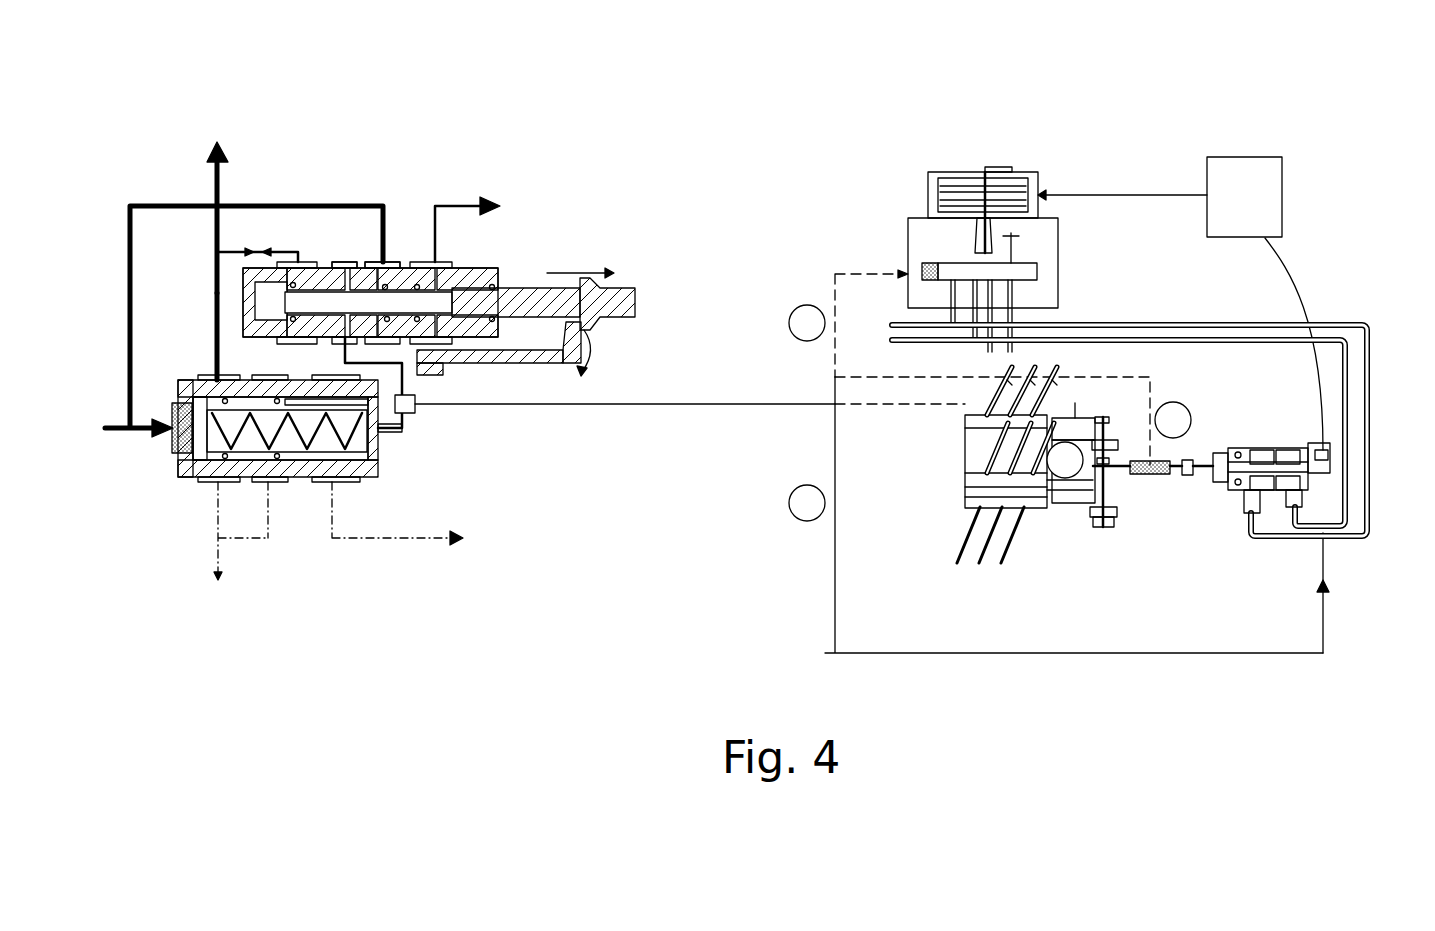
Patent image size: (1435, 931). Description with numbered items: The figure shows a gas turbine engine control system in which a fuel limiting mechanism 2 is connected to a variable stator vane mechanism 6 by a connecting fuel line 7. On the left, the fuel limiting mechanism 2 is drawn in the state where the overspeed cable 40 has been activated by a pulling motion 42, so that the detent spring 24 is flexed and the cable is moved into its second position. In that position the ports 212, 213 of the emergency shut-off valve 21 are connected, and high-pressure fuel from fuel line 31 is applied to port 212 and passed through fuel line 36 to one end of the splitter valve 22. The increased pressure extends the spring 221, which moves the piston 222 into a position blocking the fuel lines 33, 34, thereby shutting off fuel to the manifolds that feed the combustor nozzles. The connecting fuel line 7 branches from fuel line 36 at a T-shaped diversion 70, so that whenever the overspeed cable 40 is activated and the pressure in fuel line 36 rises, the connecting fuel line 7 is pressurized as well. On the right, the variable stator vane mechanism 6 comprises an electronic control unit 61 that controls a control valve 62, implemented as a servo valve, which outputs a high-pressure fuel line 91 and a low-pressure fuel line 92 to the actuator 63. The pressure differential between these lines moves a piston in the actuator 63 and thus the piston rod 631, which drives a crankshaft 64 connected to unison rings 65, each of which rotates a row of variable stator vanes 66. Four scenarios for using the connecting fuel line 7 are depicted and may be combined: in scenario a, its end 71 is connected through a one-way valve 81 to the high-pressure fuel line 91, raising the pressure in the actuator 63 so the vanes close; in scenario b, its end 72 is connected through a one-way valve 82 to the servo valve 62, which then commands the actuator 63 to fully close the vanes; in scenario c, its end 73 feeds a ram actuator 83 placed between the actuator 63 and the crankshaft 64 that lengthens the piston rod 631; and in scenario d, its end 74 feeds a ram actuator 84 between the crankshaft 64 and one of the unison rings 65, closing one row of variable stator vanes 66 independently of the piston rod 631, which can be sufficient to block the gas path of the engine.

The fuel limiting mechanism 2 is at (307, 165).
The fuel line 31 is at (342, 205).
The fuel line 33 is at (215, 293).
The emergency shut-off valve 21 is at (408, 262).
The port 212 is at (322, 262).
The port 213 is at (372, 262).
The overspeed cable 40 is at (528, 288).
The pulling motion 42 is at (583, 274).
The detent spring 24 is at (535, 363).
The splitter valve 22 is at (300, 477).
The spring 221 is at (337, 435).
The piston 222 is at (200, 457).
The fuel line 34 is at (213, 565).
The fuel line 36 is at (410, 454).
The T-shaped diversion 70 is at (405, 413).
The connecting fuel line 7 is at (722, 404).
The variable stator vane mechanism 6 is at (958, 120).
The electronic control unit 61 is at (1245, 157).
The control valve 62 is at (1020, 172).
The one-way valve 82 is at (903, 268).
The end of connecting fuel line 72 is at (835, 287).
The end of connecting fuel line 73 is at (950, 377).
The end of connecting fuel line 74 is at (884, 404).
The end of connecting fuel line 71 is at (1055, 653).
The one-way valve 81 is at (1330, 588).
The high-pressure fuel line 91 is at (1345, 360).
The low-pressure fuel line 92 is at (1368, 330).
The variable stator vanes 66 is at (970, 530).
The ram actuator 84 is at (1083, 420).
The unison rings 65 is at (1057, 500).
The crankshaft 64 is at (1093, 505).
The ram actuator 83 is at (1163, 478).
The piston rod 631 is at (1177, 462).
The actuator 63 is at (1262, 448).